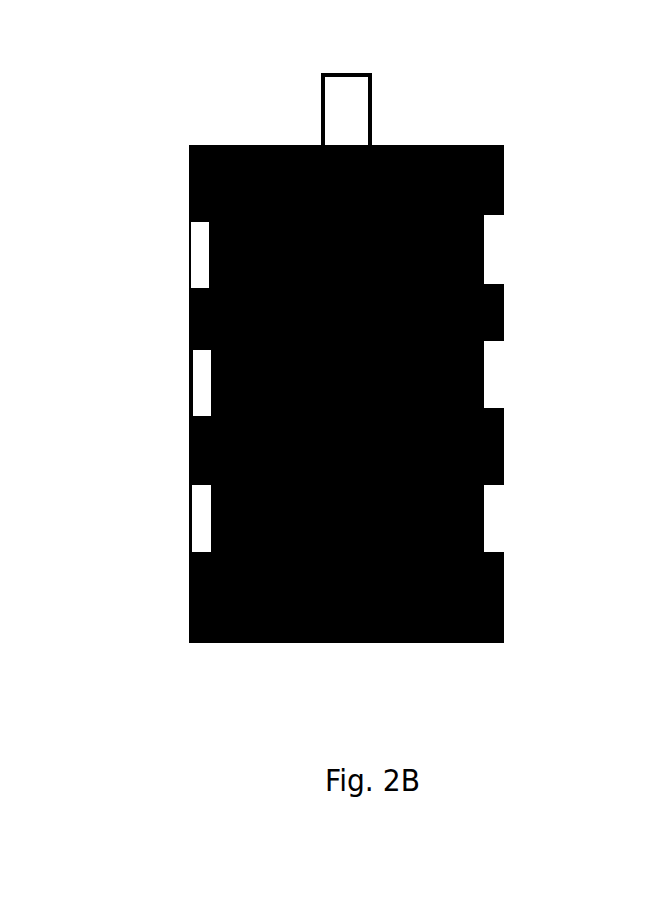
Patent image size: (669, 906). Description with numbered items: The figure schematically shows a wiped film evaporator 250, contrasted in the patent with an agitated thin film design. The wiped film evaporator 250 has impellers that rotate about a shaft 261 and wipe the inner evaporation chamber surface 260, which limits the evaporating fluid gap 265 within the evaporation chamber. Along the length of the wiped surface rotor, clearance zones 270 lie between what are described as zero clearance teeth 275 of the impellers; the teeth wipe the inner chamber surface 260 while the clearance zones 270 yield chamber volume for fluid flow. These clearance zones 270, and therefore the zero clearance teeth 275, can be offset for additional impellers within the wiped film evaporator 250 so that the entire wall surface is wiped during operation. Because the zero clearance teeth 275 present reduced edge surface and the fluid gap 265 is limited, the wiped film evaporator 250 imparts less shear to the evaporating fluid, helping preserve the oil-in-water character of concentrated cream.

The wiped film evaporator 250 is at (344, 339).
The inner evaporation chamber surface 260 is at (182, 173).
The shaft 261 is at (313, 102).
The evaporating fluid gap 265 is at (186, 244).
The clearance zones 270 is at (520, 373).
The zero clearance teeth 275 is at (182, 300).